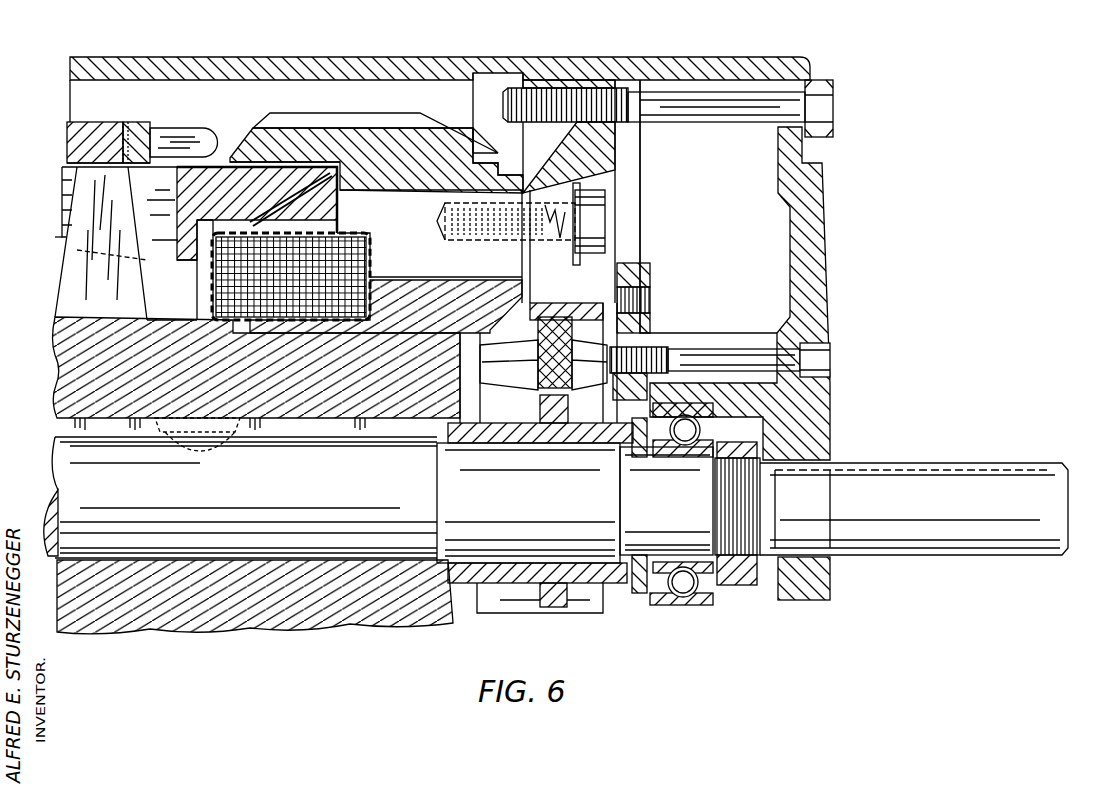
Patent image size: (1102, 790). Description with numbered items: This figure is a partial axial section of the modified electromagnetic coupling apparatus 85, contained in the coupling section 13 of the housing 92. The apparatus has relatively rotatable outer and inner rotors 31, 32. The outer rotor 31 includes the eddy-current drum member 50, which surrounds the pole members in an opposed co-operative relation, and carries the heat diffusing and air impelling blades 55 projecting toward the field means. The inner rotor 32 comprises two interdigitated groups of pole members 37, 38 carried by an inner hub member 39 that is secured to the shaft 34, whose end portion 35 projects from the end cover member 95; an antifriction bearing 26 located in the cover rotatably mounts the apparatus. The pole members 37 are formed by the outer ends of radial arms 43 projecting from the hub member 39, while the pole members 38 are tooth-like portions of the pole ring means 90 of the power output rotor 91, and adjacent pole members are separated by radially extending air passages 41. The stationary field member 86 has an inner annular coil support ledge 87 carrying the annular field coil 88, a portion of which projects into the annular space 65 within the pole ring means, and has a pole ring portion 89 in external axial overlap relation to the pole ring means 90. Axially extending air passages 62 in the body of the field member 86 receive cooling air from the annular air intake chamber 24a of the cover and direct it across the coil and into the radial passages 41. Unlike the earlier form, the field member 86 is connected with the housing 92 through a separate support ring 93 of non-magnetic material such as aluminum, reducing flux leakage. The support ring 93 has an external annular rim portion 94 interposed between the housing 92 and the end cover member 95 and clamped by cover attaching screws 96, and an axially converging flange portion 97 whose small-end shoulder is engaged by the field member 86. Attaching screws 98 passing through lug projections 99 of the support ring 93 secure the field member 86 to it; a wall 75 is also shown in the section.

The coupling section 13 is at (390, 58).
The housing 92 is at (328, 58).
The stationary field member 86 is at (478, 147).
The electromagnetic coupling apparatus 85 is at (410, 111).
The pole ring portion 89 is at (275, 135).
The pole ring means 90 is at (250, 178).
The support ring 93 is at (602, 147).
The axially converging flange portion 97 is at (535, 160).
The external annular rim portion 94 is at (605, 78).
The cover attaching screws 96 is at (725, 97).
The eddy-current drum member 50 is at (103, 127).
The heat diffusing and air impelling blades 55 is at (175, 128).
The outer rotor 31 is at (88, 118).
The pole members 37 is at (97, 167).
The pole members 38 is at (63, 200).
The inner rotor 32 is at (68, 287).
The radially extending air passages 41 is at (160, 198).
The power output rotor 91 is at (170, 244).
The radial arms 43 is at (140, 292).
The annular space 65 is at (232, 237).
The guide wall 75 is at (335, 195).
The annular field coil 88 is at (270, 245).
The inner annular coil support ledge 87 is at (277, 337).
The attaching screws 98 is at (593, 222).
The lug projections 99 is at (565, 260).
The axially extending air passages 62 is at (457, 265).
The inner hub member 39 is at (110, 407).
The shaft 34 is at (88, 490).
The antifriction bearing 26 is at (673, 457).
The end portion 35 is at (903, 535).
The end cover member 95 is at (813, 215).
The annular air intake chamber 24a is at (772, 278).